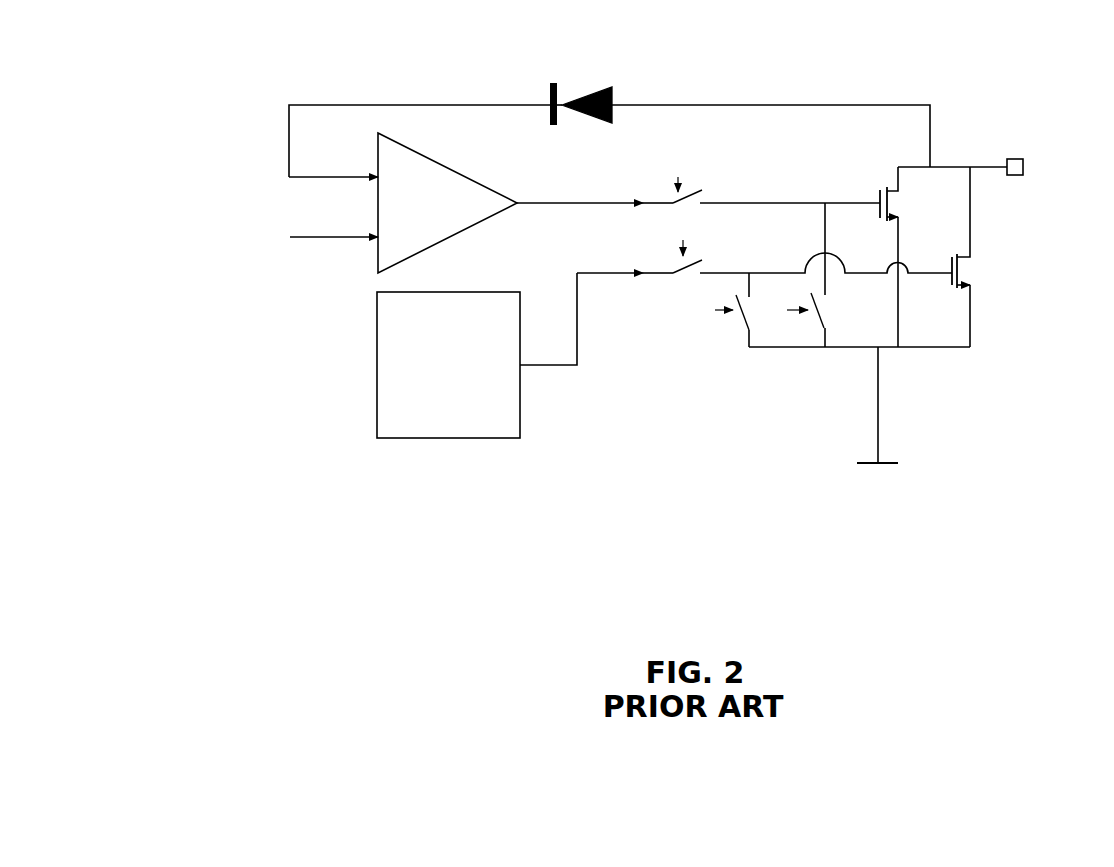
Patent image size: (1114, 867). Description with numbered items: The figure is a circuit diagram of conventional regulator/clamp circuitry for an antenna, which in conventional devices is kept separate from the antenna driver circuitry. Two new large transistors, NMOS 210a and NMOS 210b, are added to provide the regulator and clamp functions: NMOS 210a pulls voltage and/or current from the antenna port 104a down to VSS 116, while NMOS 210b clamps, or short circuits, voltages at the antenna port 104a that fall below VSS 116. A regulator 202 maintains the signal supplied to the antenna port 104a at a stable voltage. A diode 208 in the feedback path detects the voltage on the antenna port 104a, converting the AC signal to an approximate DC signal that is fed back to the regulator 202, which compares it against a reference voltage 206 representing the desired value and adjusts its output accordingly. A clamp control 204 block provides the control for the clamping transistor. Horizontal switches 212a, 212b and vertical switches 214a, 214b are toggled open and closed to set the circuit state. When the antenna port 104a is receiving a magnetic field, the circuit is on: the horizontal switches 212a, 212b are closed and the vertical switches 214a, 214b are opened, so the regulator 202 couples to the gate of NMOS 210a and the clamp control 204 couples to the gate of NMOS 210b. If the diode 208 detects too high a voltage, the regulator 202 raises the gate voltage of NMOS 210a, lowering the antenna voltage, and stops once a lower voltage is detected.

The antenna port 104a is at (1023, 167).
The VSS 116 is at (898, 478).
The regulator 202 is at (470, 228).
The clamp control 204 is at (440, 440).
The reference voltage 206 is at (285, 254).
The diode 208 is at (593, 76).
The NMOS 210a is at (908, 197).
The NMOS 210b is at (997, 263).
The horizontal switch 212a is at (685, 180).
The horizontal switch 212b is at (688, 243).
The vertical switch 214a is at (742, 335).
The vertical switch 214b is at (812, 335).